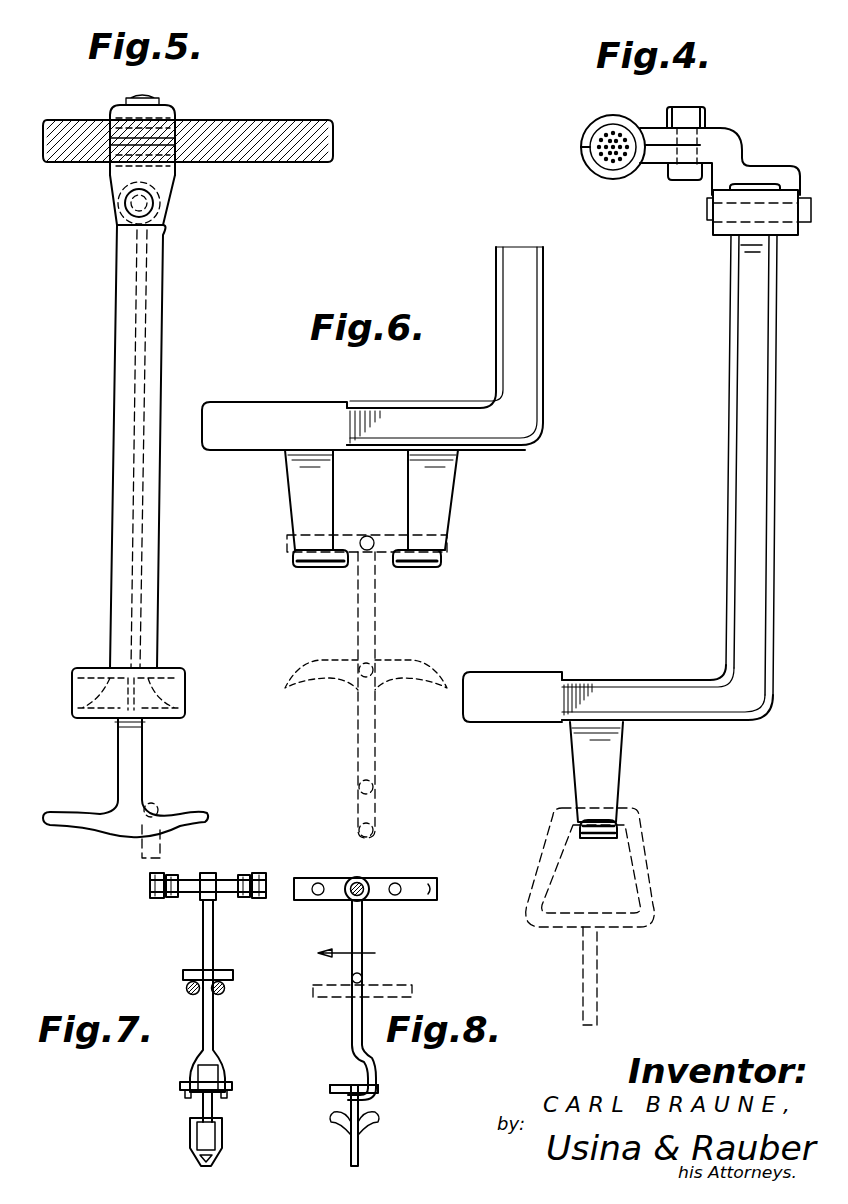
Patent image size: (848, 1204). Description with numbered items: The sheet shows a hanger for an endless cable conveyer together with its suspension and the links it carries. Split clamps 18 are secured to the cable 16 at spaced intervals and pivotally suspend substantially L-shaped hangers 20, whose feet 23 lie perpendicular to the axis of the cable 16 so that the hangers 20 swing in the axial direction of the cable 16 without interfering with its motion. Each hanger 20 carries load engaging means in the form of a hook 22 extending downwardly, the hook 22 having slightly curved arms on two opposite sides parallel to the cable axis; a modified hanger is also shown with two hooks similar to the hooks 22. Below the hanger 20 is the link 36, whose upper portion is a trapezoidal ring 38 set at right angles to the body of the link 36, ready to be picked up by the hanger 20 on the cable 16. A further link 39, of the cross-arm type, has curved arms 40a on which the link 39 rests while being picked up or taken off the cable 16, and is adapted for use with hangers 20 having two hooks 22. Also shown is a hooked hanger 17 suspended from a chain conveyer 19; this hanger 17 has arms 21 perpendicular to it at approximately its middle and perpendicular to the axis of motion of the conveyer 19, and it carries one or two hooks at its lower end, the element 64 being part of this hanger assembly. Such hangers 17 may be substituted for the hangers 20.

In FIG. 5, the cable 16 is at (292, 165).
In FIG. 4, the cable 16 is at (598, 170).
In FIG. 7, the hooked hanger 17 is at (203, 937).
In FIG. 8, the hooked hanger 17 is at (352, 937).
In FIG. 5, the split clamps 18 is at (168, 112).
In FIG. 4, the split clamps 18 is at (725, 142).
In FIG. 7, the chain conveyer 19 is at (160, 892).
In FIG. 8, the chain conveyer 19 is at (405, 900).
In FIG. 5, the hangers 20 is at (120, 378).
In FIG. 4, the hangers 20 is at (748, 390).
In FIG. 6, the hangers 20 is at (530, 358).
In FIG. 7, the arms 21 is at (185, 972).
In FIG. 8, the arms 21 is at (362, 978).
In FIG. 5, the hook 22 is at (135, 778).
In FIG. 4, the hook 22 is at (608, 772).
In FIG. 6, the hook 22 is at (420, 506).
In FIG. 5, the feet 23 is at (95, 670).
In FIG. 4, the feet 23 is at (590, 680).
In FIG. 6, the feet 23 is at (300, 405).
In FIG. 4, the link 36 is at (598, 972).
In FIG. 5, the trapezoidal ring 38 is at (158, 808).
In FIG. 4, the trapezoidal ring 38 is at (640, 872).
In FIG. 6, the trapezoidal ring 38 is at (367, 543).
In FIG. 6, the link 39 is at (372, 608).
In FIG. 7, the link 39 is at (213, 1110).
In FIG. 8, the link 39 is at (354, 1125).
In FIG. 6, the curved arms 40a is at (430, 652).
In FIG. 8, the curved arms 40a is at (403, 1132).
In FIG. 7, the balls 64 is at (186, 988).